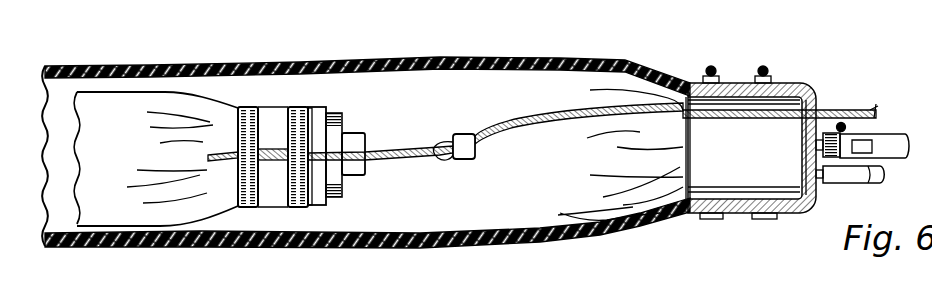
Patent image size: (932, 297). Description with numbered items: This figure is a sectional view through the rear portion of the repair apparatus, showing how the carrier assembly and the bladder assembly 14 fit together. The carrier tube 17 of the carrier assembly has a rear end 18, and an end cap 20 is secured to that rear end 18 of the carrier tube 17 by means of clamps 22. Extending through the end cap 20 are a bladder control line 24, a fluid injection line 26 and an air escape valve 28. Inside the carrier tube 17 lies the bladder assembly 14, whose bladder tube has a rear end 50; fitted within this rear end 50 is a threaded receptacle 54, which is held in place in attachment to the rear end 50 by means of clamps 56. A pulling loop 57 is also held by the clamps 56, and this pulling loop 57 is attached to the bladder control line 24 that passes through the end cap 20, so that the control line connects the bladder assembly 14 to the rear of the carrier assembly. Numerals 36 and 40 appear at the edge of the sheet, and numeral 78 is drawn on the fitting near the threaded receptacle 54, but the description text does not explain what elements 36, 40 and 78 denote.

The bladder assembly 14 is at (118, 92).
The carrier tube 17 is at (535, 60).
The rear end 18 is at (784, 80).
The end cap 20 is at (806, 92).
The clamps 22 is at (763, 66).
The bladder control line 24 is at (500, 128).
The fluid injection line 26 is at (885, 140).
The air escape valve 28 is at (873, 180).
The element 36 is at (16, 10).
The element 40 is at (92, 2).
The rear end 50 is at (383, 163).
The threaded receptacle 54 is at (292, 107).
The clamps 56 is at (347, 113).
The pulling loop 57 is at (310, 205).
The nut 78 is at (353, 133).